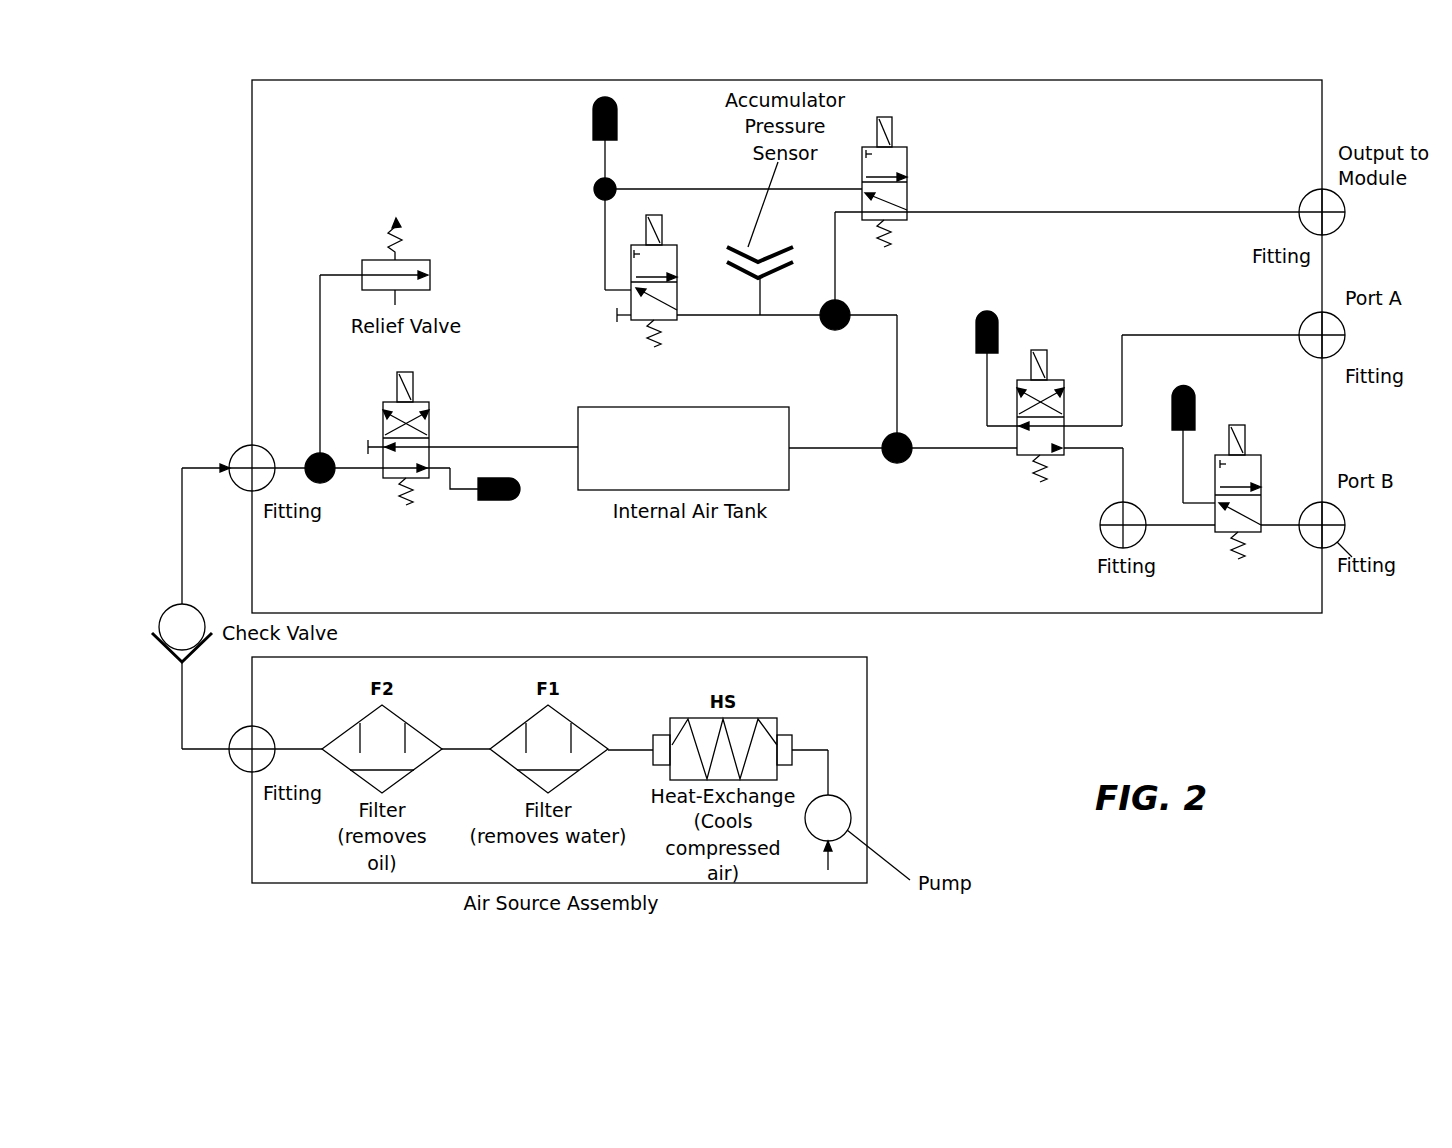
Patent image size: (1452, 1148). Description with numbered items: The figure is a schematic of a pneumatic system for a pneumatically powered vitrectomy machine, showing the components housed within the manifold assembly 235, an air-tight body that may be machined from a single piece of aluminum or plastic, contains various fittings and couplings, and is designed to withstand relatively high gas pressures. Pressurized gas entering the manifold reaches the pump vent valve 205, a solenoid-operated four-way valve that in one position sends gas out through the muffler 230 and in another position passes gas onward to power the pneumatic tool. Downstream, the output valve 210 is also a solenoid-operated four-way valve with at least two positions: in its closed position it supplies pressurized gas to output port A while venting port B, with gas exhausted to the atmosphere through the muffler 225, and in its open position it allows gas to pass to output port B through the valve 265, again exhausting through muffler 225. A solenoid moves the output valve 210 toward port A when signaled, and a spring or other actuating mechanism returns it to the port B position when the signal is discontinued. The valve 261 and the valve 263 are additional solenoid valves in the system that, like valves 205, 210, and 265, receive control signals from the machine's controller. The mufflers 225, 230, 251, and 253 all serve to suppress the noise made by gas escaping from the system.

The pump vent valve 205 is at (466, 473).
The output valve 210 is at (1042, 451).
The muffler 225 is at (992, 307).
The muffler 230 is at (496, 508).
The manifold assembly 235 is at (740, 608).
The muffler 251 is at (687, 192).
The muffler 253 is at (1189, 427).
The valve 261 is at (664, 302).
The valve 263 is at (912, 204).
The valve 265 is at (1242, 558).